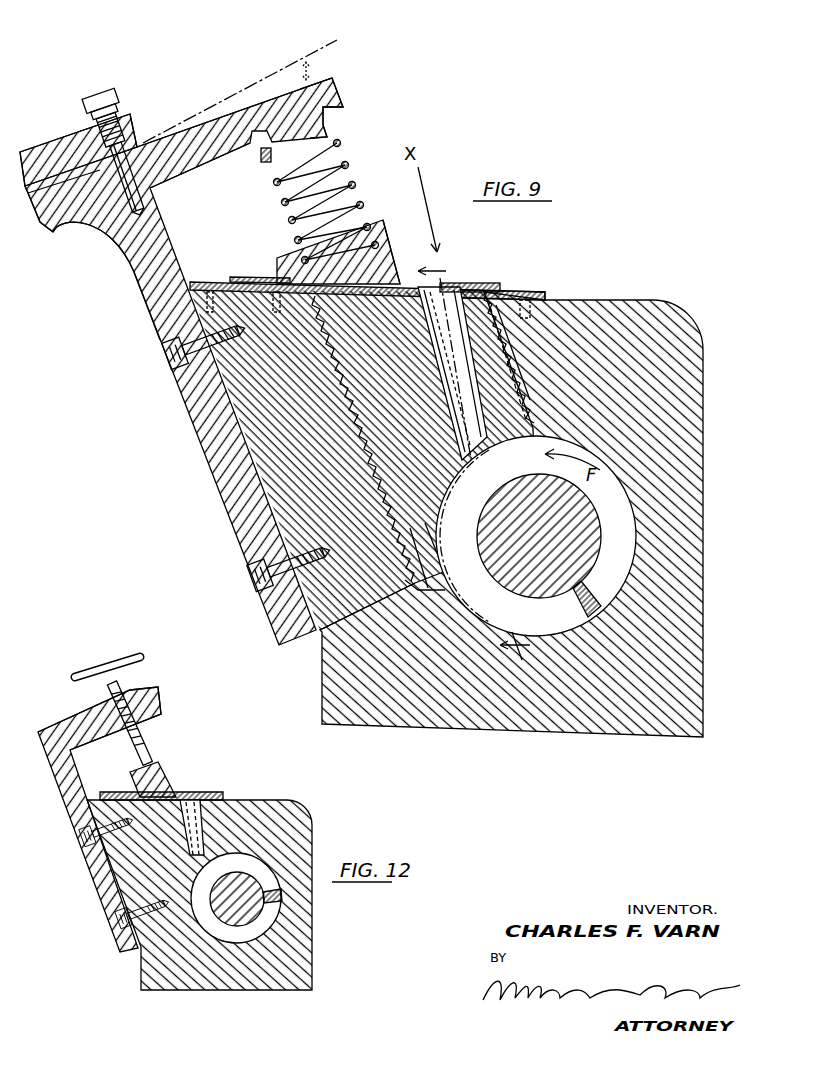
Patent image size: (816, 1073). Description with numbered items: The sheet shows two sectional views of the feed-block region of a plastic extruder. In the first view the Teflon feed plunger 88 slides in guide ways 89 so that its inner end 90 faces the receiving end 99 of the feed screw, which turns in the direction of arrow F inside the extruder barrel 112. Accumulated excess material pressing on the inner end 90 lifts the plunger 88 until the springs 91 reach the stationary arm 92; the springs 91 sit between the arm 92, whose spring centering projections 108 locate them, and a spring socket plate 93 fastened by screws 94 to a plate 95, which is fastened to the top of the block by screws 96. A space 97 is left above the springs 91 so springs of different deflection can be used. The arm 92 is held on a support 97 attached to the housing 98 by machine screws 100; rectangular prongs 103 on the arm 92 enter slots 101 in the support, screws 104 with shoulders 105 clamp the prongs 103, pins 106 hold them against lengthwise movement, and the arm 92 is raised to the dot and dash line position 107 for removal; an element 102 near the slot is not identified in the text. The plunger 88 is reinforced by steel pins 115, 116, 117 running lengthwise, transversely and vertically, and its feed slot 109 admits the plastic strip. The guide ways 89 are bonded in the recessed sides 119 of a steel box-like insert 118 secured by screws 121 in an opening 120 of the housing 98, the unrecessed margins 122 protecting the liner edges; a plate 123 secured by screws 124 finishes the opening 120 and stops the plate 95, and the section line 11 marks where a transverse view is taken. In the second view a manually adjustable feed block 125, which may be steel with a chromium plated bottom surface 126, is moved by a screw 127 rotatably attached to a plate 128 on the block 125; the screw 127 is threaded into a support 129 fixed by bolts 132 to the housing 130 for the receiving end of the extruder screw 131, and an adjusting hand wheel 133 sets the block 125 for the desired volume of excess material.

In FIG. 9, the feed plunger 88 is at (335, 365).
In FIG. 9, the guide ways 89 is at (358, 447).
In FIG. 9, the inner end of the plunger 90 is at (452, 500).
In FIG. 9, the springs 91 is at (348, 153).
In FIG. 9, the stationary arm 92 is at (340, 85).
In FIG. 9, the spring socket plate 93 is at (386, 240).
In FIG. 9, the screws 94 is at (399, 262).
In FIG. 9, the plate 95 is at (505, 294).
In FIG. 9, the screws 96 is at (476, 289).
In FIG. 9, the support 97 is at (255, 165).
In FIG. 9, the housing 98 is at (262, 448).
In FIG. 9, the receiving end of the feed screw 99 is at (528, 590).
In FIG. 9, the machine screws 100 is at (168, 360).
In FIG. 9, the slots 101 is at (66, 240).
In FIG. 9, the clamp 102 is at (70, 142).
In FIG. 9, the prongs 103 is at (40, 212).
In FIG. 9, the screws 104 is at (114, 92).
In FIG. 9, the shoulders 105 is at (145, 142).
In FIG. 9, the pins 106 is at (110, 238).
In FIG. 9, the dot and dash line position 107 is at (305, 50).
In FIG. 9, the spring centering projections 108 is at (268, 165).
In FIG. 9, the feed slot 109 is at (492, 444).
In FIG. 9, the extruder barrel 112 is at (630, 518).
In FIG. 9, the steel pins 115 is at (372, 478).
In FIG. 9, the steel pins 116 is at (382, 503).
In FIG. 9, the steel pins 117 is at (395, 542).
In FIG. 9, the steel box-like insert 118 is at (335, 403).
In FIG. 9, the recessed sides 119 is at (532, 432).
In FIG. 9, the opening 120 is at (520, 386).
In FIG. 9, the screws 121 is at (530, 344).
In FIG. 9, the unrecessed margins 122 is at (308, 310).
In FIG. 9, the plate 123 is at (240, 278).
In FIG. 9, the screws 124 is at (210, 282).
In FIG. 9, the section line 11- 11 is at (484, 413).
In FIG. 12, the feed block 125 is at (220, 830).
In FIG. 12, the chromium plated bottom surface 126 is at (201, 893).
In FIG. 12, the screw 127 is at (150, 740).
In FIG. 12, the plate 128 is at (208, 793).
In FIG. 12, the support 129 is at (160, 700).
In FIG. 12, the housing 130 is at (115, 888).
In FIG. 12, the extruder screw 131 is at (235, 925).
In FIG. 12, the bolts 132 is at (80, 840).
In FIG. 12, the adjusting hand wheel 133 is at (78, 670).